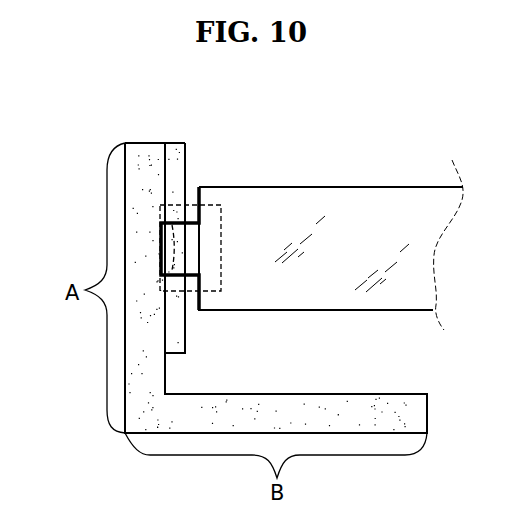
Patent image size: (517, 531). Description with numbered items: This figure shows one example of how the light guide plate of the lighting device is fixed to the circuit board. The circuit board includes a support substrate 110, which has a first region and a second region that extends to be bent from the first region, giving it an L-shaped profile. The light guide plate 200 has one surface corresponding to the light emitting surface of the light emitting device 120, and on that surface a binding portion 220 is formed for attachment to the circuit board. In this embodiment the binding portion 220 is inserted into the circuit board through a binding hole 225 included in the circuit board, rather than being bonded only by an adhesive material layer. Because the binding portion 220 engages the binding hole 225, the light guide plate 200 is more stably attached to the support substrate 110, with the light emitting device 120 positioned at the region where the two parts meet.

The support substrate 110 is at (139, 151).
The binding portion 220 is at (181, 205).
The binding hole 225 is at (156, 250).
The light guide plate 200 is at (350, 205).
The light emitting device 120 is at (208, 292).